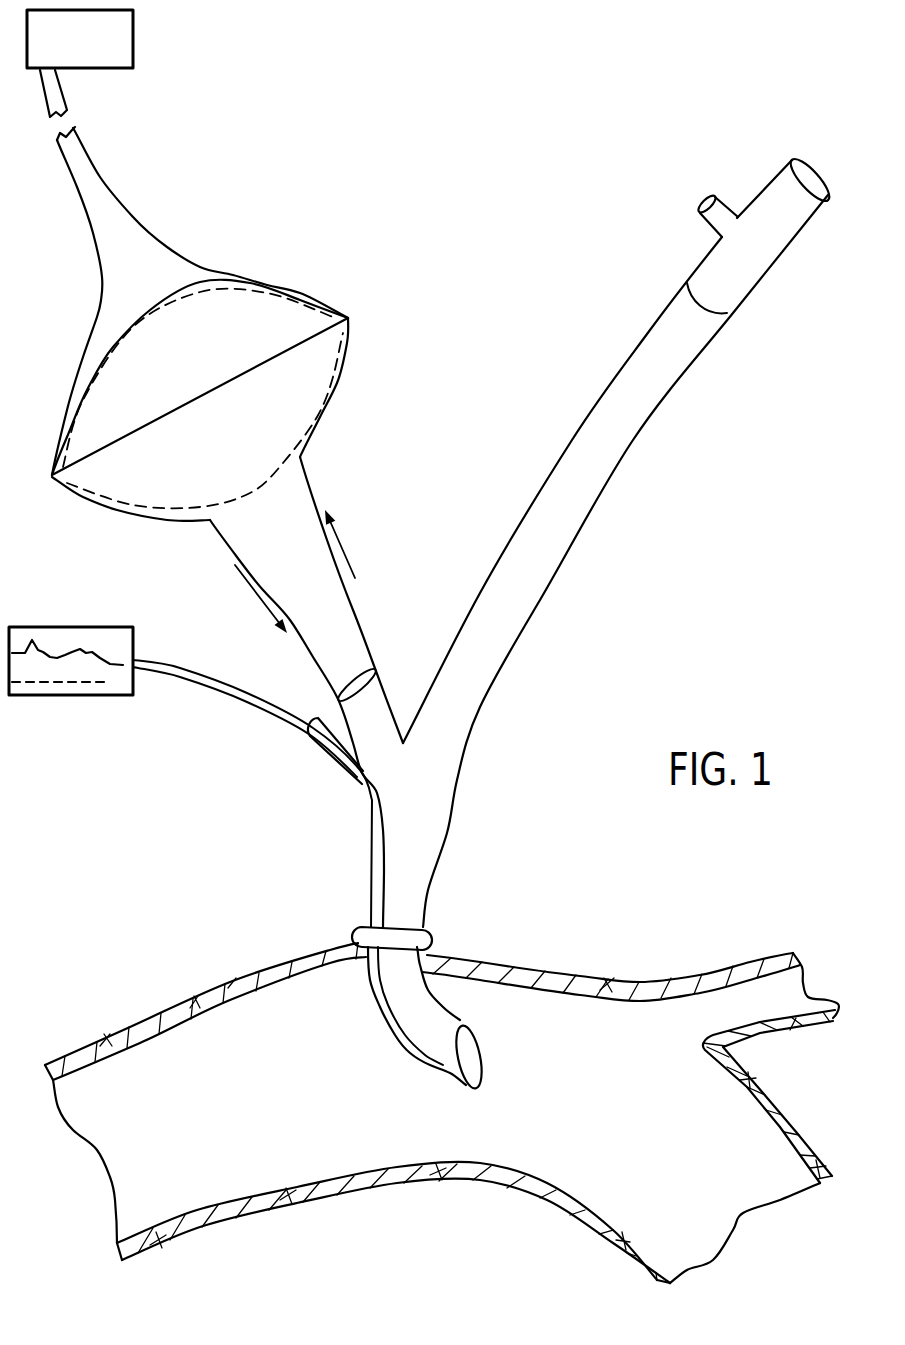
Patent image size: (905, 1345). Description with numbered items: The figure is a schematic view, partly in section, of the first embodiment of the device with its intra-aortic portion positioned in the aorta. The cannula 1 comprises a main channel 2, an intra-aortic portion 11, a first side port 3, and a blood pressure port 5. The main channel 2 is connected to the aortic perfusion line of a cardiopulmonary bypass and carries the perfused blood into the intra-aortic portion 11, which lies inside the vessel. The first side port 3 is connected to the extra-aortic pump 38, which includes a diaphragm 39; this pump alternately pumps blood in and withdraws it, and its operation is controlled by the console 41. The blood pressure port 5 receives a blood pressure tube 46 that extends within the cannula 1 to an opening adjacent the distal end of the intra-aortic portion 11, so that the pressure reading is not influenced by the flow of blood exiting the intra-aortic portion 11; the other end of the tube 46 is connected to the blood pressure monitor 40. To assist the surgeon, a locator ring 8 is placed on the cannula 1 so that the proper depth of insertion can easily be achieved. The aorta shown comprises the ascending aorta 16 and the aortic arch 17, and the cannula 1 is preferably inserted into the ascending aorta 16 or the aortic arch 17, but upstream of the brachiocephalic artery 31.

The cannula 1 is at (445, 318).
The main channel 2 is at (693, 338).
The first side port 3 is at (377, 695).
The blood pressure port 5 is at (308, 733).
The locator ring 8 is at (425, 933).
The intra-aortic portion 11 is at (462, 1022).
The ascending aorta 16 is at (150, 1250).
The aortic arch 17 is at (440, 1182).
The brachiocephalic artery 31 is at (765, 963).
The extra-aortic pump 38 is at (270, 312).
The diaphragm 39 is at (320, 328).
The blood pressure monitor 40 is at (80, 673).
The console 41 is at (133, 45).
The blood pressure tube 46 is at (243, 697).